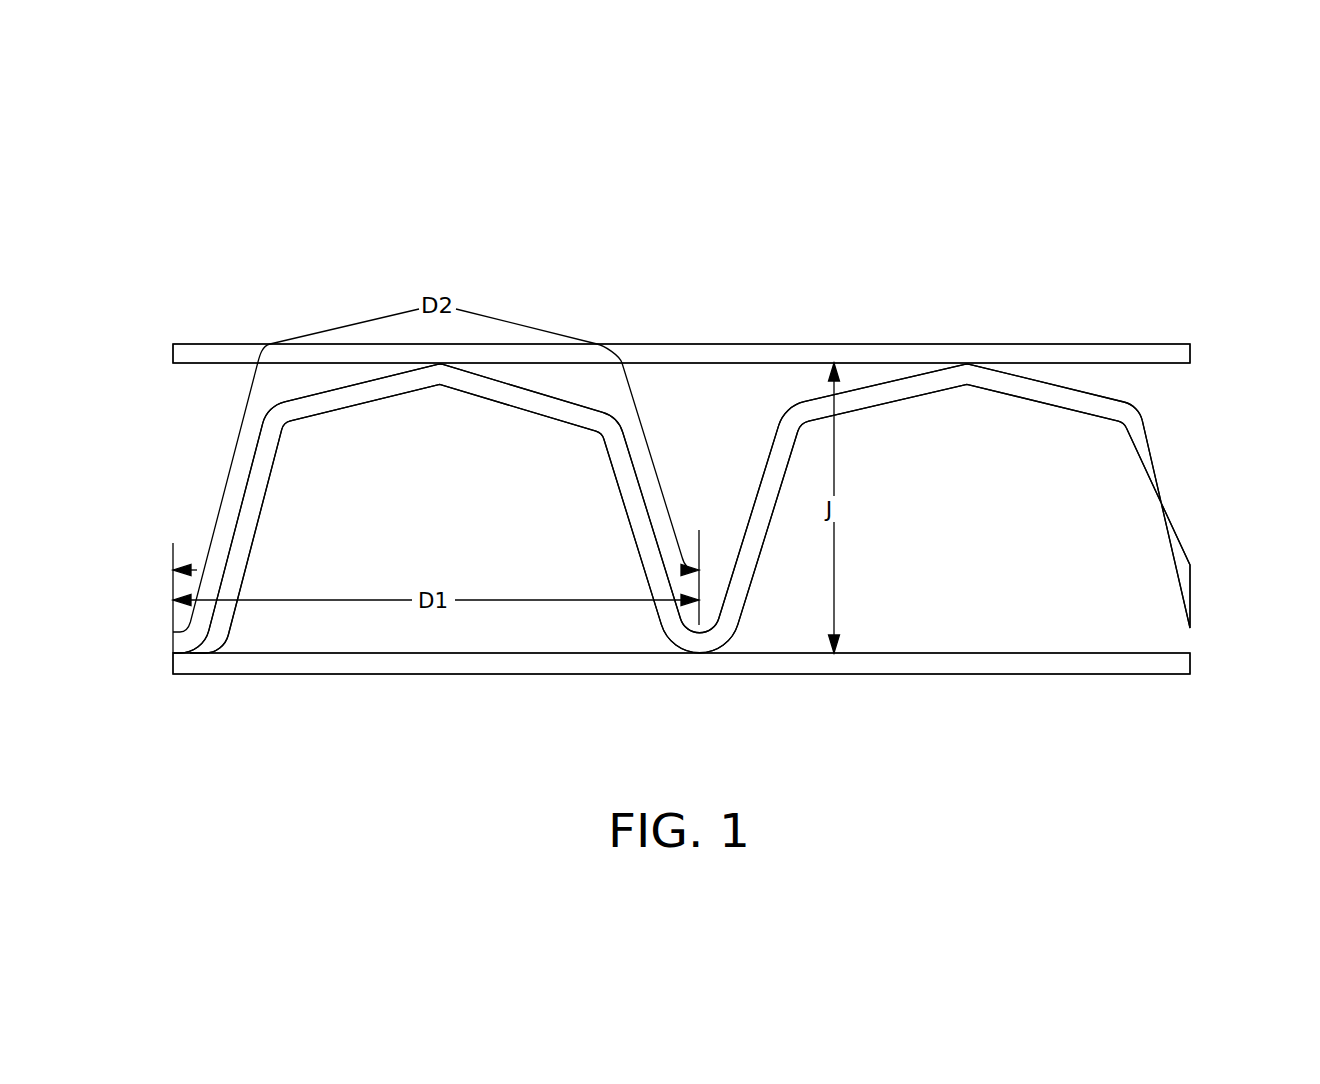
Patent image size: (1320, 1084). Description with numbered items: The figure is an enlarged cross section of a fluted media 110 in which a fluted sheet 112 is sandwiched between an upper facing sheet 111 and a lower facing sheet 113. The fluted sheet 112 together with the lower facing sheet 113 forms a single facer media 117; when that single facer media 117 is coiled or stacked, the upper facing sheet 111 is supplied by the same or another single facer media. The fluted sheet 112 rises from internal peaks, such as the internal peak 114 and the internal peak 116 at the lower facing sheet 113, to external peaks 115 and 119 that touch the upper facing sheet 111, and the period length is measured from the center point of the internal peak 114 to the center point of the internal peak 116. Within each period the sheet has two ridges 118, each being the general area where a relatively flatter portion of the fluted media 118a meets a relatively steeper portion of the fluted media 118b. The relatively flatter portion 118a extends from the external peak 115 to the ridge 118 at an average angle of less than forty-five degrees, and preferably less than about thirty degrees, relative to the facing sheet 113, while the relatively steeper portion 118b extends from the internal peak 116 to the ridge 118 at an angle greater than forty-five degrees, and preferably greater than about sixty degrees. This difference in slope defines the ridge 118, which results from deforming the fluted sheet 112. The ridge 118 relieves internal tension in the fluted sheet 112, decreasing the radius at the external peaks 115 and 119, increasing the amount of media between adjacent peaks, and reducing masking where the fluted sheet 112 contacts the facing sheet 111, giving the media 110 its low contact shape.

The media 110 is at (1260, 421).
The facing sheet 111 is at (1030, 344).
The fluted sheet 112 is at (1178, 524).
The facing sheet 113 is at (405, 668).
The internal peak 114 is at (703, 643).
The external peak 115 is at (433, 387).
The internal peak 116 is at (173, 654).
The single facer media 117 is at (1227, 591).
The ridge 118 is at (268, 427).
The relatively flatter portion of the fluted media 118a is at (350, 407).
The relatively steeper portion of the fluted media 118b is at (220, 569).
The external peak 119 is at (961, 388).